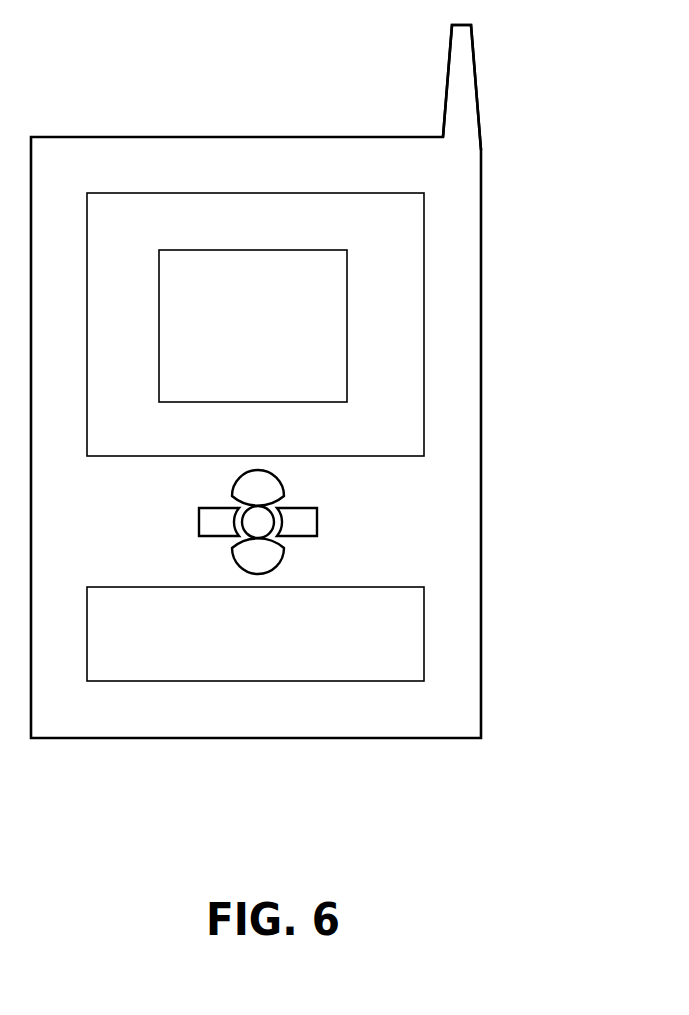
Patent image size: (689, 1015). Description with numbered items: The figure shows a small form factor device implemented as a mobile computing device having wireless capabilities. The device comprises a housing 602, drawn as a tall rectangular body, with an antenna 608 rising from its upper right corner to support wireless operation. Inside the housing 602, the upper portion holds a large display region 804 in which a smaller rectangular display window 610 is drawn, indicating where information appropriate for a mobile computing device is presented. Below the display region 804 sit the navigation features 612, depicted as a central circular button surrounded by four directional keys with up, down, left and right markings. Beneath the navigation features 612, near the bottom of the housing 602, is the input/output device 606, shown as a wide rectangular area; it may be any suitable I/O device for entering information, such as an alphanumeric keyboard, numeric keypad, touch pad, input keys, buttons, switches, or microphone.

The housing 602 is at (482, 438).
The antenna 608 is at (447, 73).
The display area 804 is at (424, 212).
The display window 610 is at (347, 292).
The navigation features 612 is at (327, 513).
The input/output (I/O) device 606 is at (424, 625).